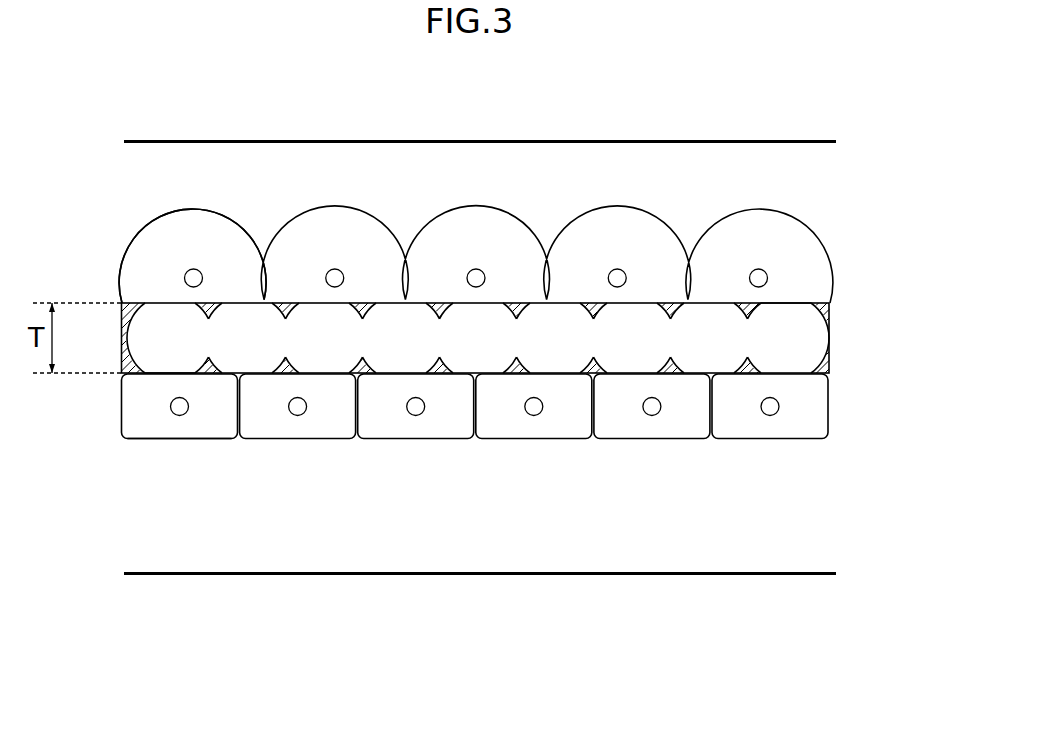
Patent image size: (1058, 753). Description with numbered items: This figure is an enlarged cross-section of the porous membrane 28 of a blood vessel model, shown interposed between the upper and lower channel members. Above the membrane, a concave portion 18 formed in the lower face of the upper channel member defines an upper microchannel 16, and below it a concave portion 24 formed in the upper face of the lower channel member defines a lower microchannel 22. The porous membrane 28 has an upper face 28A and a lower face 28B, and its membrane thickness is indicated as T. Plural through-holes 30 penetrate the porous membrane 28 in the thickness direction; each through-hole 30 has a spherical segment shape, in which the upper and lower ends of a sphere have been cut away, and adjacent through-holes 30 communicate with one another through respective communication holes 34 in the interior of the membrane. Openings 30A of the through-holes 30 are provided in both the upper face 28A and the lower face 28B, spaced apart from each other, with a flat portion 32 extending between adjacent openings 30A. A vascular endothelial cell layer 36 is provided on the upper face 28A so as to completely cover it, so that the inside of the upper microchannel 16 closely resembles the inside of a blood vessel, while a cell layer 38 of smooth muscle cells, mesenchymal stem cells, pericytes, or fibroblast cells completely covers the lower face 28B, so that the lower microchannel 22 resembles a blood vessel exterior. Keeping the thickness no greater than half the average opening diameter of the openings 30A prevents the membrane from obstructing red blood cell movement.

The upper microchannel 16 is at (680, 172).
The concave portion 18 is at (574, 143).
The lower microchannel 22 is at (718, 552).
The concave portion 24 is at (574, 572).
The porous membrane 28 is at (834, 310).
The upper face 28A is at (150, 303).
The lower face 28B is at (452, 374).
The through-hole 30 is at (820, 355).
The opening 30A is at (172, 373).
The flat portion 32 is at (668, 302).
The communication hole 34 is at (287, 365).
The vascular endothelial cell layer 36 is at (155, 256).
The cell layer 38 is at (152, 446).